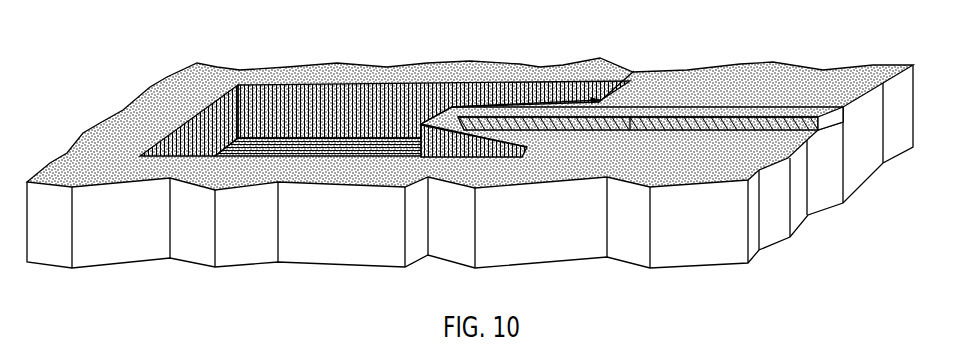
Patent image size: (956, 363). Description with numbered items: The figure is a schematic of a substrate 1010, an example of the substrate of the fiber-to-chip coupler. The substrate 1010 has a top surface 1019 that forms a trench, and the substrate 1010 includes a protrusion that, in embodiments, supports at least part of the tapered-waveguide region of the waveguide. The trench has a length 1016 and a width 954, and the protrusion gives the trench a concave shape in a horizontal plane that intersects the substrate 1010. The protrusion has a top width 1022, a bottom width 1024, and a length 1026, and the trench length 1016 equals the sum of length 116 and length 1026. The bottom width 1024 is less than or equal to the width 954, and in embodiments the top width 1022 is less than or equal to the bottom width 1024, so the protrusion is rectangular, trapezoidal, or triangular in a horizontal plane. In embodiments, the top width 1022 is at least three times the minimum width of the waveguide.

The substrate 1010 is at (177, 74).
The length 116 is at (257, 75).
The width 954 is at (215, 87).
The length 1016 is at (497, 167).
The top width 1022 is at (433, 107).
The bottom width 1024 is at (537, 143).
The length 1026 is at (620, 77).
The top surface 1019 is at (772, 75).